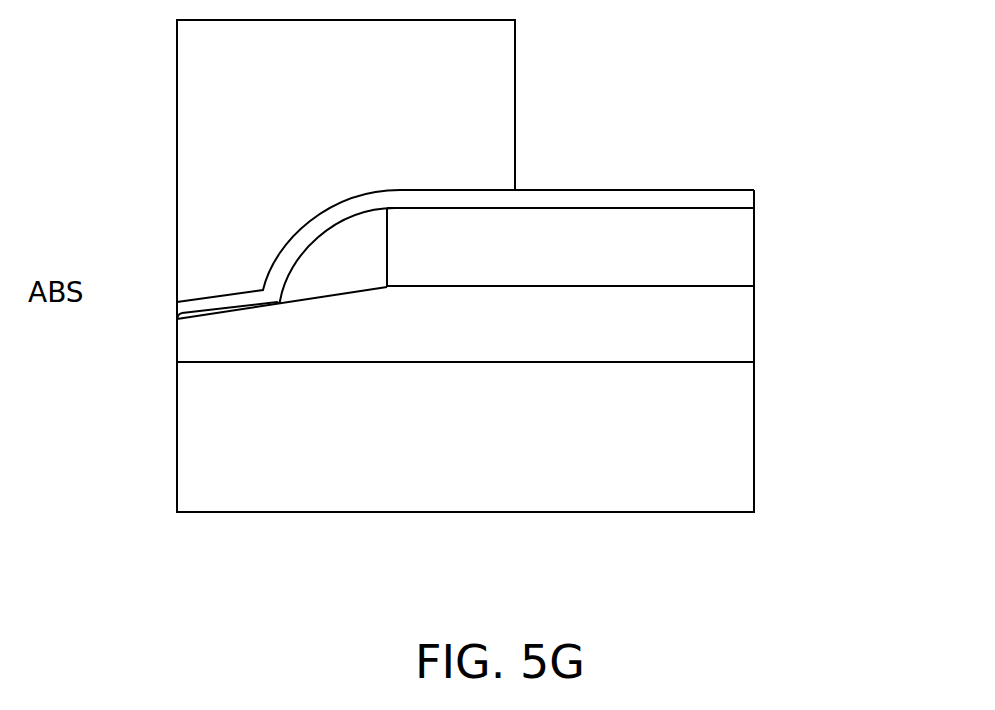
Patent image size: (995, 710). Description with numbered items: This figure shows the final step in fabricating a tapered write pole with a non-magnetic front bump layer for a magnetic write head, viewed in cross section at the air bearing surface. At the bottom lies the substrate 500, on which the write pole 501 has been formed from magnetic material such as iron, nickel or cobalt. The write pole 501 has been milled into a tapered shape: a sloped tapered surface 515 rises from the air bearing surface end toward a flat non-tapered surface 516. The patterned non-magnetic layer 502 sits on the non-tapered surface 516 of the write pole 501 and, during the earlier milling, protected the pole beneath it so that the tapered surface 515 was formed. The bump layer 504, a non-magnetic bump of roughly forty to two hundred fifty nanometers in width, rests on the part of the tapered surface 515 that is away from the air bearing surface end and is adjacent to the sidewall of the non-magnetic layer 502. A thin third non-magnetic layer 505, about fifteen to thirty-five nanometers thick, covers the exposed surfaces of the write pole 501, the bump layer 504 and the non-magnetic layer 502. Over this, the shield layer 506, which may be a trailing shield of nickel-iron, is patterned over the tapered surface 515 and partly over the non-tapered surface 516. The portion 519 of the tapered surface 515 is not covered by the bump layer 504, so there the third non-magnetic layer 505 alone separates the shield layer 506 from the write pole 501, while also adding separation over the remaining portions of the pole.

The substrate 500 is at (728, 450).
The write pole 501 is at (732, 327).
The non-magnetic layer 502 is at (732, 252).
The bump layer 504 is at (347, 258).
The third non-magnetic layer 505 is at (732, 198).
The shield layer 506 is at (406, 78).
The tapered surface 515 is at (328, 297).
The non-tapered surface 516 is at (452, 284).
The portion of the tapered surface 519 is at (224, 310).